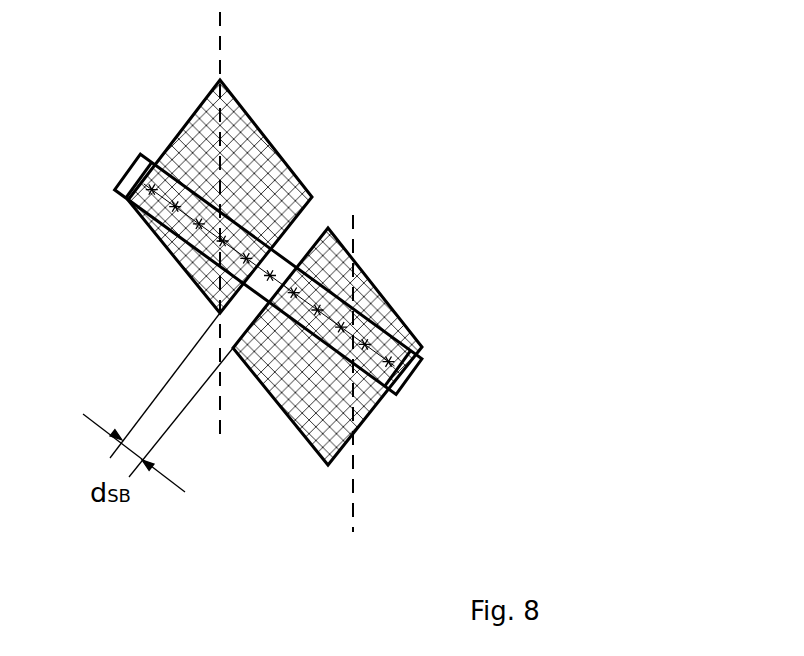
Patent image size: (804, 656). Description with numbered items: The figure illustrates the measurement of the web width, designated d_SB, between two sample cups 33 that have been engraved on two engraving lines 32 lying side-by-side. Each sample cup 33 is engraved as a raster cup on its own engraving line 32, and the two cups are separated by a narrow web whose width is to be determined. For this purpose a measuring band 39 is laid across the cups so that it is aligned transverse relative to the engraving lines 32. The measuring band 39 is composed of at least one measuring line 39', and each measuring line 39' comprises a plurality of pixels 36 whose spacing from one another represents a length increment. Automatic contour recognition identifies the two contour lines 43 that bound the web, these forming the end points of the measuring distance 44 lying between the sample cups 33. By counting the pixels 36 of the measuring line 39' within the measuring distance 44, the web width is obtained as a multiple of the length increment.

The engraving line 32 is at (294, 269).
The sample cup 33 is at (202, 123).
The pixel 36 is at (176, 207).
The measuring band 39 is at (318, 274).
The measuring line 39' is at (316, 275).
The contour line 43 is at (312, 197).
The measuring distance 44 is at (133, 452).